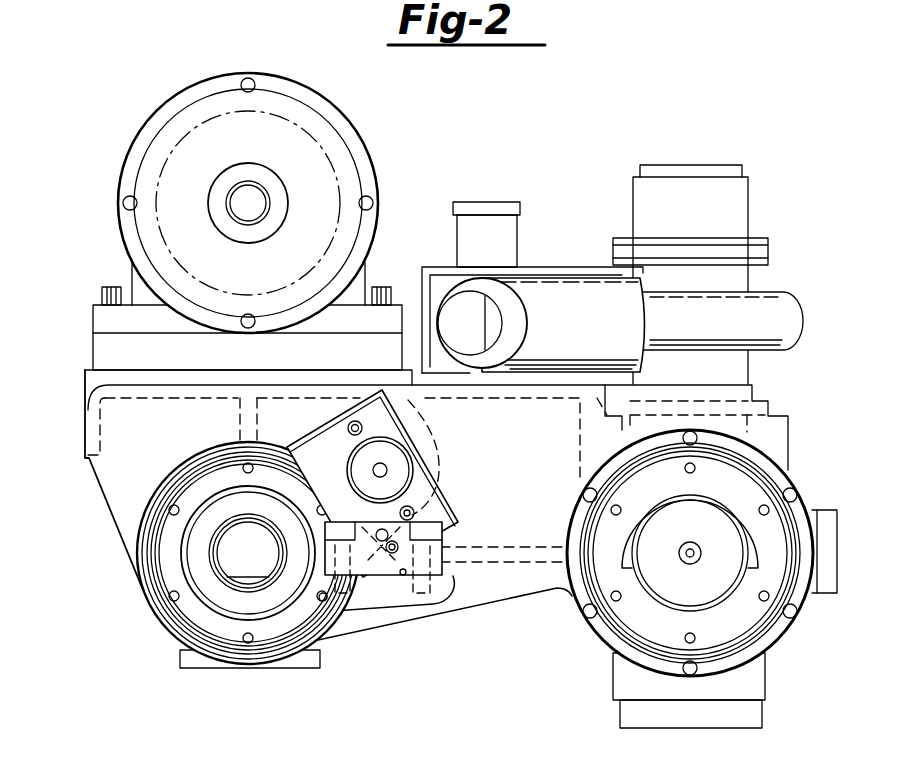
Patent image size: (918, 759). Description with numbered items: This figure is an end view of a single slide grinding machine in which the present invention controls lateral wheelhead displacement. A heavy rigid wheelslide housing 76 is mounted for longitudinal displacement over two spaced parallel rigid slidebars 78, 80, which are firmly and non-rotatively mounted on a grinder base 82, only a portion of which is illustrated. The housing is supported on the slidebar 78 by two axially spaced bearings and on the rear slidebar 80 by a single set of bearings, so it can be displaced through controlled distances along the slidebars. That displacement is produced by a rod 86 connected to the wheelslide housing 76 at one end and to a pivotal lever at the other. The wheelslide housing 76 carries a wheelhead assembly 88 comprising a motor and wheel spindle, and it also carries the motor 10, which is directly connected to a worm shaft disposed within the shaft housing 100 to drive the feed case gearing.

The motor 10 is at (627, 208).
The shaft housing 100 is at (775, 317).
The wheelslide housing 76 is at (85, 438).
The slidebar 78 is at (205, 552).
The slidebar 80 is at (722, 598).
The grinder base 82 is at (405, 577).
The rod 86 is at (388, 470).
The wheelhead assembly 88 is at (172, 97).